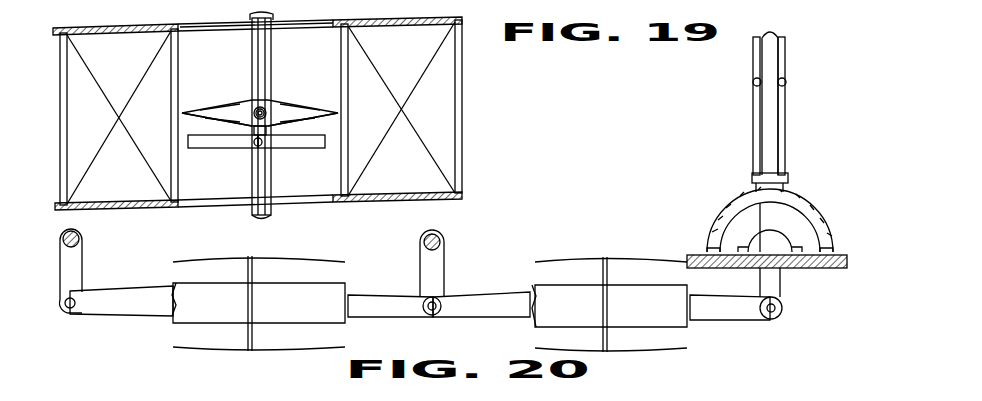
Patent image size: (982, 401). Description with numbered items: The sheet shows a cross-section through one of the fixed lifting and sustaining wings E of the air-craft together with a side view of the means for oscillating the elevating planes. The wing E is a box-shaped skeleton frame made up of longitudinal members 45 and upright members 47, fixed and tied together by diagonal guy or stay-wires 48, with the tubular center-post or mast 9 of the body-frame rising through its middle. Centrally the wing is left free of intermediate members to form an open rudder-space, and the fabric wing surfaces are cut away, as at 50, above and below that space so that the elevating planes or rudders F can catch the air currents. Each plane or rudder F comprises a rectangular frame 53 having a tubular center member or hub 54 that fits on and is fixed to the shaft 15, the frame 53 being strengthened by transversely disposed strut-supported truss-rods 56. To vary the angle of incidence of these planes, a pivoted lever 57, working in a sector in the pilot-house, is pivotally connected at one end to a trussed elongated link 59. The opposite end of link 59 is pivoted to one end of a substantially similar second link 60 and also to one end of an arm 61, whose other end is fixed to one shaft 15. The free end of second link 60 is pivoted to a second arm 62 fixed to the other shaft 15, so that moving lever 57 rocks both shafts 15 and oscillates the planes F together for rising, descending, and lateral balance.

In FIG. 19, the center-post or mast 9 is at (272, 166).
In FIG. 19, the alining shaft 15 is at (266, 100).
In FIG. 20, the alining shaft 15 is at (80, 240).
In FIG. 19, the longitudinal member 45 is at (53, 30).
In FIG. 19, the upright member 47 is at (170, 89).
In FIG. 19, the guy or stay-wire 48 is at (393, 125).
In FIG. 19, the cut-away of wing surface 50 is at (226, 33).
In FIG. 20, the cut-away of wing surface 50 is at (724, 222).
In FIG. 19, the frame of elevating plane 53 is at (178, 112).
In FIG. 19, the tubular center member or hub 54 is at (246, 106).
In FIG. 19, the strut-supported truss-rod 56 is at (225, 103).
In FIG. 20, the pivoted lever 57 is at (764, 104).
In FIG. 19, the trussed elongated link 59 is at (300, 148).
In FIG. 20, the trussed elongated link 59 is at (478, 305).
In FIG. 19, the second link 60 is at (212, 148).
In FIG. 20, the second link 60 is at (128, 305).
In FIG. 19, the arm 61 is at (252, 148).
In FIG. 20, the arm 61 is at (444, 270).
In FIG. 20, the second arm 62 is at (83, 272).
In FIG. 19, the fixed lifting and sustaining wing E is at (400, 43).
In FIG. 19, the elevating plane or rudder F is at (300, 112).